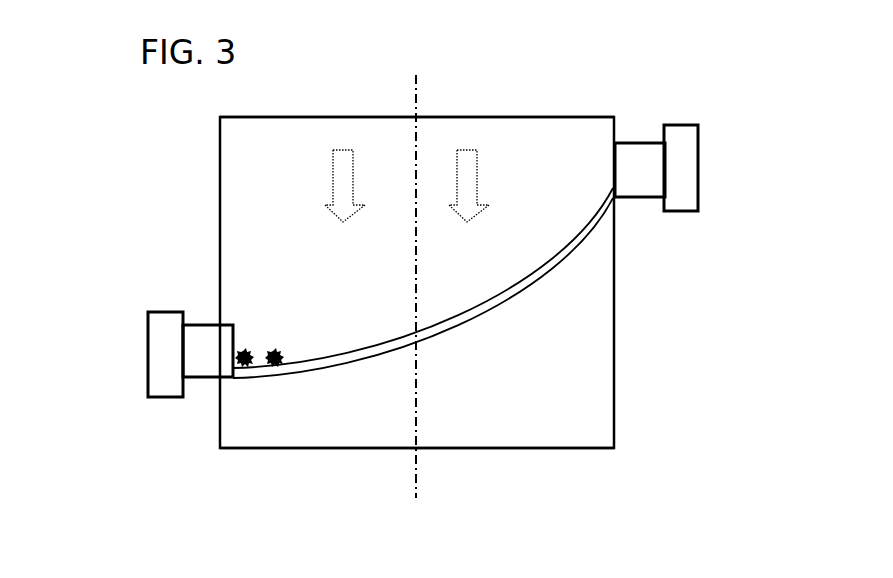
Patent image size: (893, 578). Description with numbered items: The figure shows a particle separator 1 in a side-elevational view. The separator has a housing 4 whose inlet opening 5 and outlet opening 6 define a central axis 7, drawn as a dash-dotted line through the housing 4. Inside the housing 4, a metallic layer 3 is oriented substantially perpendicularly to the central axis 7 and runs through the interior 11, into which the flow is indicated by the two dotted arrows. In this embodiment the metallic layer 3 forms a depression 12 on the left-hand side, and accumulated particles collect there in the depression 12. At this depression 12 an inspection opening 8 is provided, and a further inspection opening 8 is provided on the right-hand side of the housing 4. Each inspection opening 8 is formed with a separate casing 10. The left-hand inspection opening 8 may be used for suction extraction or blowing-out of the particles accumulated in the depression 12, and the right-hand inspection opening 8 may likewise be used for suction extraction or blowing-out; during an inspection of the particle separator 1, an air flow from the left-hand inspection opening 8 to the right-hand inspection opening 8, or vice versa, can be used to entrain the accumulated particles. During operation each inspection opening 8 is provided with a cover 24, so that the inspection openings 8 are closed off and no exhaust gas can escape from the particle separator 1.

The particle separator 1 is at (672, 105).
The metallic layer 3 is at (303, 362).
The housing 4 is at (242, 147).
The inlet opening 5 is at (572, 117).
The outlet opening 6 is at (563, 447).
The central axis 7 is at (418, 427).
The inspection opening 8 is at (628, 197).
The casing 10 is at (650, 180).
The interior 11 is at (445, 140).
The depression 12 is at (237, 373).
The cover 24 is at (685, 170).